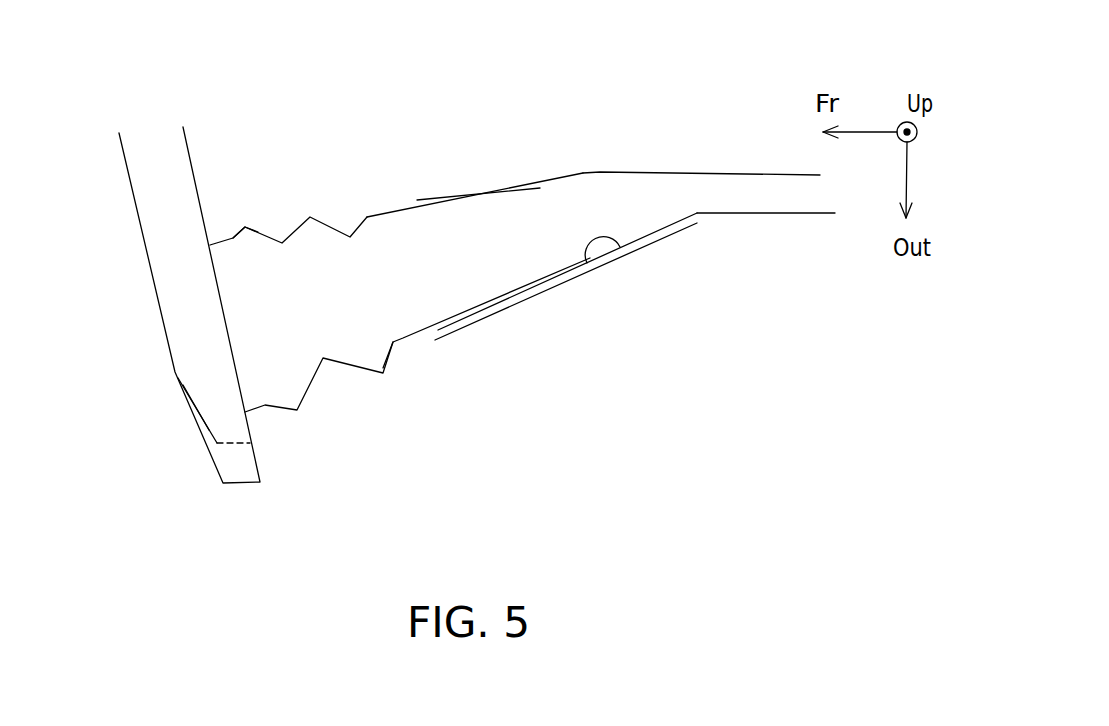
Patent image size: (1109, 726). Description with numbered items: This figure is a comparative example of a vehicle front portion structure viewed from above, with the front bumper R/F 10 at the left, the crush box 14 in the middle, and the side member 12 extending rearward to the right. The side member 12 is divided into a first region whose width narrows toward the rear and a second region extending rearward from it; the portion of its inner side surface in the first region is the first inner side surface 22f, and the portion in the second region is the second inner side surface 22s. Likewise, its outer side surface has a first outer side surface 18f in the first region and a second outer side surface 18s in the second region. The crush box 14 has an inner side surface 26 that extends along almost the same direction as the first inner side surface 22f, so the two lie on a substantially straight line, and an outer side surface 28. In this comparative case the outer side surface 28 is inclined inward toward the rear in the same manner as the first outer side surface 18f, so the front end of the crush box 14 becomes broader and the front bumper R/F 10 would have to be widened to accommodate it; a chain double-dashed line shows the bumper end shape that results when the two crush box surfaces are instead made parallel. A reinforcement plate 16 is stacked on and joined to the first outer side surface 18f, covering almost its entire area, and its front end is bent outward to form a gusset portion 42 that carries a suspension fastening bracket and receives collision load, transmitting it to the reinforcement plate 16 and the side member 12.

The front bumper R/F 10 is at (143, 257).
The side member 12 is at (593, 121).
The crush box 14 is at (288, 151).
The reinforcement plate 16 is at (635, 286).
The first outer side surface 18f is at (620, 247).
The second outer side surface 18s is at (777, 213).
The first inner side surface 22f is at (496, 189).
The second inner side surface 22s is at (715, 175).
The inner side surface 26 is at (238, 227).
The outer side surface 28 is at (310, 390).
The gusset portion 42 is at (440, 372).